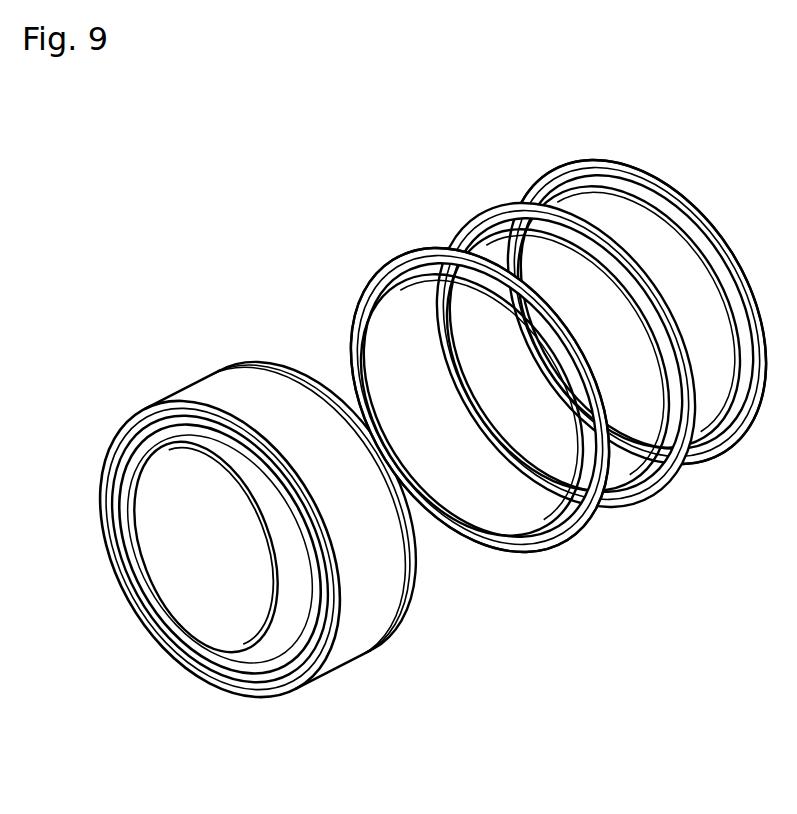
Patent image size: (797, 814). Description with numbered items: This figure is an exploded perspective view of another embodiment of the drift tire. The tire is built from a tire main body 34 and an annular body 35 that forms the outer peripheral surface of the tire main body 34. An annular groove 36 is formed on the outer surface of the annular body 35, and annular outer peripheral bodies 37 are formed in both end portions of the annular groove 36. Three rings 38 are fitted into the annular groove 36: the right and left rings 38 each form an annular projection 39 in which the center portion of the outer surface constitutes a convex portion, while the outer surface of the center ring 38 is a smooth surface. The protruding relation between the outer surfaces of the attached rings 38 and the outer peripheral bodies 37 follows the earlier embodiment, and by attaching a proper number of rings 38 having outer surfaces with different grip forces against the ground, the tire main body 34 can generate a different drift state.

The tire main body 34 is at (257, 524).
The annular body 35 is at (257, 505).
The annular groove 36 is at (356, 613).
The annular outer peripheral body 37 is at (275, 368).
The ring 38 is at (722, 463).
The annular projection 39 is at (410, 250).